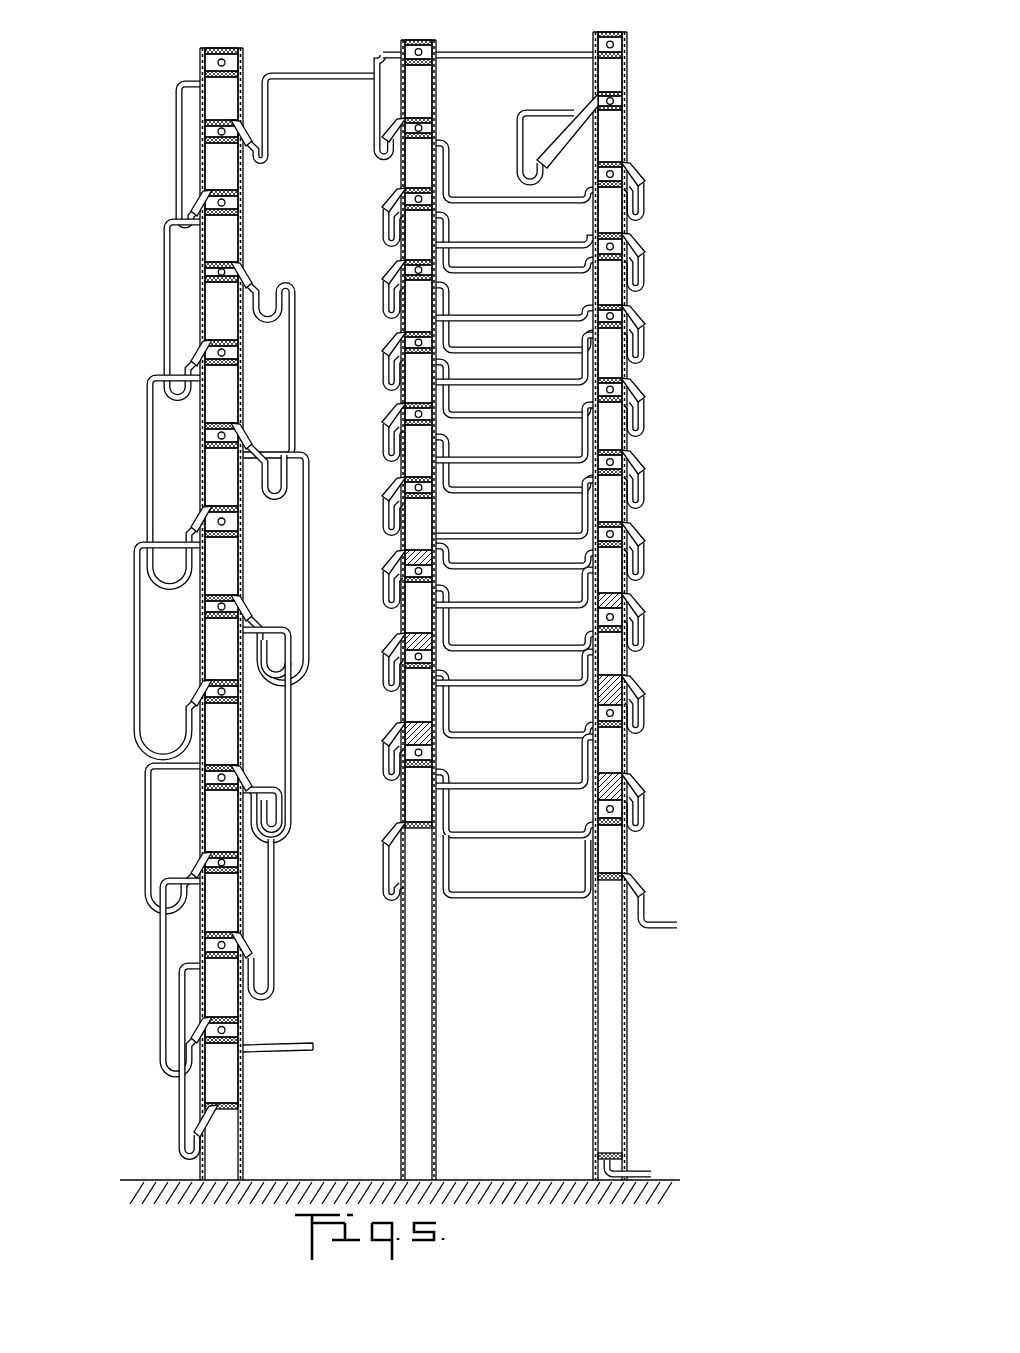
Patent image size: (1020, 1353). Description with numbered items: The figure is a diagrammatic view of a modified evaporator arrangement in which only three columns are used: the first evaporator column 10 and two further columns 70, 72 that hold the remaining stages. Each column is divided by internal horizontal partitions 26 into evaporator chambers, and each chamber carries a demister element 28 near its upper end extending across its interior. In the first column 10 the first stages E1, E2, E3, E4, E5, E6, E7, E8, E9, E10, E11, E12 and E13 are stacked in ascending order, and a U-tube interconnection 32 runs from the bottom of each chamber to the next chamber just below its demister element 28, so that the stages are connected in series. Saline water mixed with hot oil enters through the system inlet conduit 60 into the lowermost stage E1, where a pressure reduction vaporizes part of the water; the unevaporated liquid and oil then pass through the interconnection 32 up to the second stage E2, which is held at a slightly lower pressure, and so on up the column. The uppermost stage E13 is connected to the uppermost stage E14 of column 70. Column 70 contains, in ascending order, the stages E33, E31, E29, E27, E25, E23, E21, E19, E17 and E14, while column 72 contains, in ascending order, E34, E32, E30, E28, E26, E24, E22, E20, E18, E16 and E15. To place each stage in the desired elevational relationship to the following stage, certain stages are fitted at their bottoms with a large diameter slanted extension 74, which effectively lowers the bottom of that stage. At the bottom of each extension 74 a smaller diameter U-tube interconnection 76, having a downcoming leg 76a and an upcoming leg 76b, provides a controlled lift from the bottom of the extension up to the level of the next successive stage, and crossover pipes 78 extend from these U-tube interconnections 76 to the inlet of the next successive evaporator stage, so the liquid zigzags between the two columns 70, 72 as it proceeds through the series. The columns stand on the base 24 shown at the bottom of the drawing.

The first evaporator column 10 is at (184, 45).
The evaporator column 70 is at (466, 24).
The evaporator column 72 is at (652, 40).
The base / floor 24 is at (146, 1176).
The internal horizontal partitions 26 is at (243, 527).
The demister element 28 is at (245, 549).
The U-tube interconnection 32 is at (292, 238).
The system inlet conduit 60 is at (290, 1044).
The large diameter slanted extension 74 is at (398, 130).
The smaller diameter U-tube interconnection 76 is at (514, 171).
The downcoming leg 76a is at (378, 151).
The upcoming leg 76b is at (373, 101).
The crossover pipes 78 is at (531, 104).
The first evaporator stage E1 is at (221, 1073).
The second evaporator stage E2 is at (221, 987).
The evaporator stage E3 is at (221, 902).
The evaporator stage E4 is at (221, 821).
The evaporator stage E5 is at (221, 734).
The evaporator stage E6 is at (221, 649).
The evaporator stage E7 is at (221, 566).
The evaporator stage E8 is at (221, 477).
The evaporator stage E9 is at (221, 394).
The evaporator stage E10 is at (221, 311).
The evaporator stage E11 is at (221, 238).
The evaporator stage E12 is at (221, 166).
The uppermost evaporator stage E13 is at (221, 98).
The evaporator stage E14 is at (418, 91).
The evaporator stage E15 is at (610, 75).
The evaporator stage E16 is at (610, 136).
The evaporator stage E17 is at (418, 163).
The evaporator stage E18 is at (610, 210).
The evaporator stage E19 is at (418, 235).
The evaporator stage E20 is at (610, 282).
The evaporator stage E21 is at (418, 306).
The evaporator stage E22 is at (610, 353).
The evaporator stage E23 is at (418, 378).
The evaporator stage E24 is at (610, 426).
The evaporator stage E25 is at (418, 451).
The evaporator stage E26 is at (610, 498).
The evaporator stage E27 is at (418, 524).
The evaporator stage E28 is at (610, 570).
The evaporator stage E29 is at (418, 607).
The evaporator stage E30 is at (610, 653).
The evaporator stage E31 is at (418, 695).
The evaporator stage E32 is at (610, 750).
The evaporator stage E33 is at (418, 794).
The evaporator stage E34 is at (610, 849).